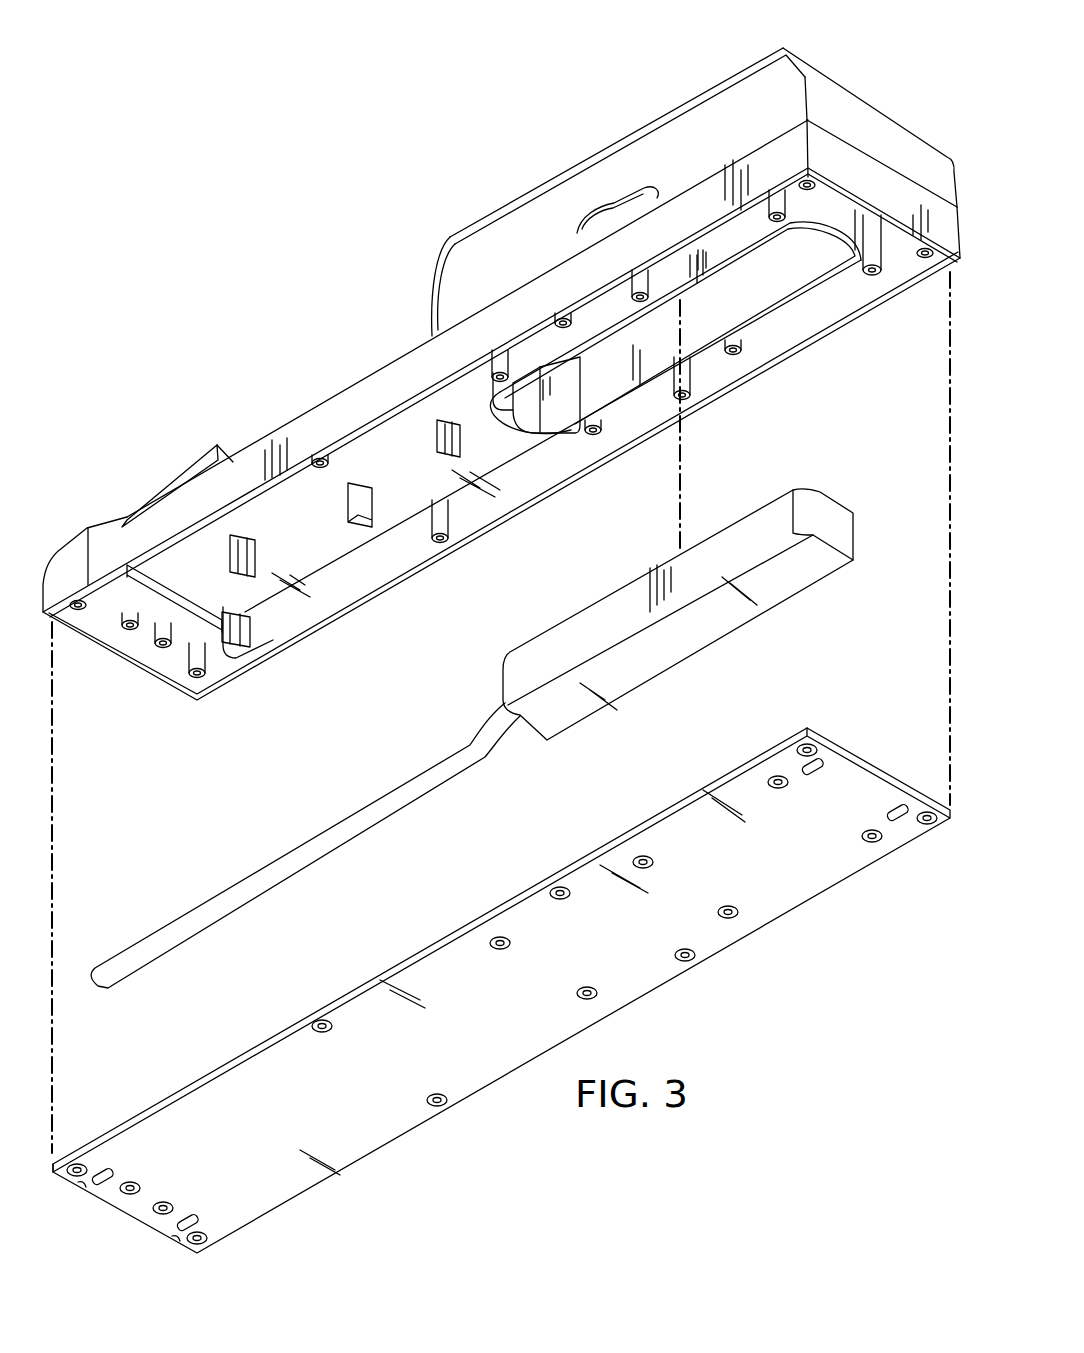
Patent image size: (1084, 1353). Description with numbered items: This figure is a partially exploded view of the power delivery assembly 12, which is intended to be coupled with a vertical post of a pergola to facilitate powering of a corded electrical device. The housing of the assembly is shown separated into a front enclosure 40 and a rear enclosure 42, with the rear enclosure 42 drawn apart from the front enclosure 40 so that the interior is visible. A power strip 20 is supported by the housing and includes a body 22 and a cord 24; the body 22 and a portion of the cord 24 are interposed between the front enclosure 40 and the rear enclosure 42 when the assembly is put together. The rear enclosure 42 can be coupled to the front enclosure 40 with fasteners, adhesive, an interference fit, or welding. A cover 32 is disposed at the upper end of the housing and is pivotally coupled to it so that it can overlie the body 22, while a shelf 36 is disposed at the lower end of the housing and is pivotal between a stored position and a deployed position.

The power delivery assembly 12 is at (293, 183).
The power strip 20 is at (830, 465).
The body 22 is at (627, 585).
The cord 24 is at (303, 845).
The cover 32 is at (688, 104).
The shelf 36 is at (184, 472).
The front enclosure 40 is at (352, 385).
The rear enclosure 42 is at (466, 921).